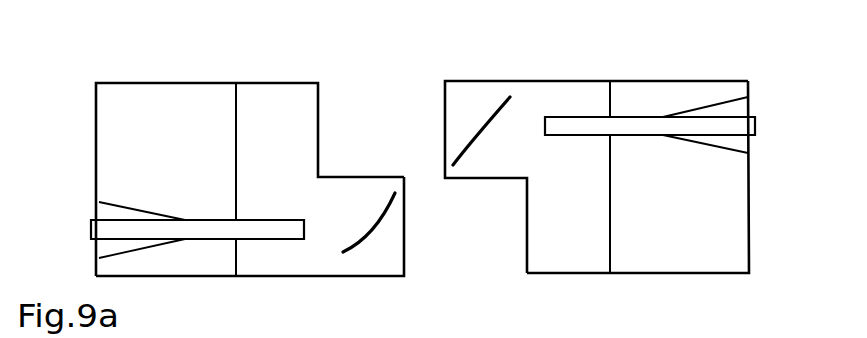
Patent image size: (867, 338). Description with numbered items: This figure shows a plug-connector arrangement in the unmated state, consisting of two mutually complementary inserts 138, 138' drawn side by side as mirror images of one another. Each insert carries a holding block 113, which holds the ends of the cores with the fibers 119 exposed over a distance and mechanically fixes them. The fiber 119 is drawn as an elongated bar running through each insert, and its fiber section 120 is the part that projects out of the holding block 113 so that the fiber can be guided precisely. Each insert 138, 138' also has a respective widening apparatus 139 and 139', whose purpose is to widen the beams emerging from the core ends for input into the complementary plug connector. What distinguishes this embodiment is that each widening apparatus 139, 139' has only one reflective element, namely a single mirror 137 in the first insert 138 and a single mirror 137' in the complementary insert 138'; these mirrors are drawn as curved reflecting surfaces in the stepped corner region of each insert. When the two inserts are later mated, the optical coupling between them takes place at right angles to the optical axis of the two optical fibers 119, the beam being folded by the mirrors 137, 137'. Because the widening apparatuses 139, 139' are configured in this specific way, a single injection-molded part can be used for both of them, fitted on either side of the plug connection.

The holding block 113 is at (162, 100).
The widening apparatus 139 is at (320, 98).
The insert 138 is at (210, 184).
The fiber 119 is at (207, 229).
The fiber section 120 is at (277, 229).
The mirror 137 is at (372, 262).
The mirror 137' is at (480, 90).
The widening apparatus 139' is at (527, 144).
The insert 138' is at (681, 177).